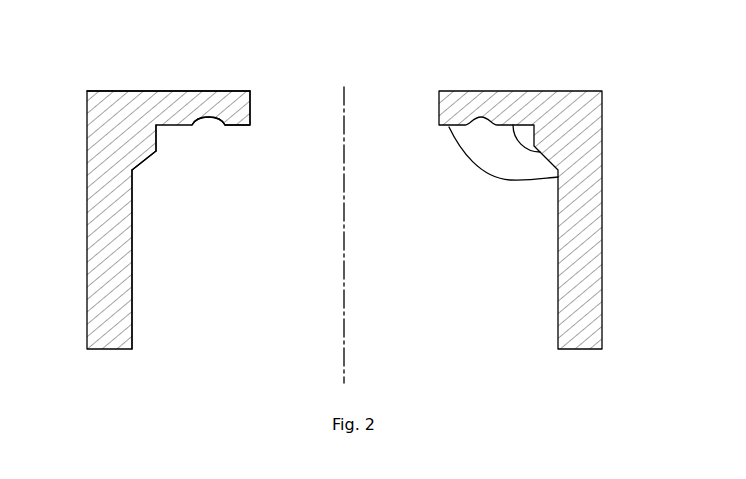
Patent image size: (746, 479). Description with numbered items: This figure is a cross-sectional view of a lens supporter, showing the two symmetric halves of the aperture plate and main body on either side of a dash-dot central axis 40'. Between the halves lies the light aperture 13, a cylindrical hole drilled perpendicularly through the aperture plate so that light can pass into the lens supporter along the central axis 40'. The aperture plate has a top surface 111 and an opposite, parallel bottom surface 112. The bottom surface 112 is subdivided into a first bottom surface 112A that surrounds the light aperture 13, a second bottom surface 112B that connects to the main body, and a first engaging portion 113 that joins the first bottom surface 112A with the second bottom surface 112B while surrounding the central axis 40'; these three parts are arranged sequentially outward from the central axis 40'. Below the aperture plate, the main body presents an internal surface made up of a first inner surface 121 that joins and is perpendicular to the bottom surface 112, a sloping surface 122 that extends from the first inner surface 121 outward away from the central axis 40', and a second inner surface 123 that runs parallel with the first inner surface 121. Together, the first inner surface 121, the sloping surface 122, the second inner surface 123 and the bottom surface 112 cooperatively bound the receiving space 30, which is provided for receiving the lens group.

The light aperture 13 is at (287, 95).
The top surface 111 is at (190, 91).
The bottom surface 112 is at (243, 127).
The first bottom surface 112A is at (558, 177).
The second bottom surface 112B is at (540, 152).
The first engaging portion 113 is at (205, 118).
The first inner surface 121 is at (155, 133).
The sloping surface 122 is at (135, 168).
The second inner surface 123 is at (132, 220).
The receiving space 30 is at (500, 330).
The central axis 40' is at (375, 241).